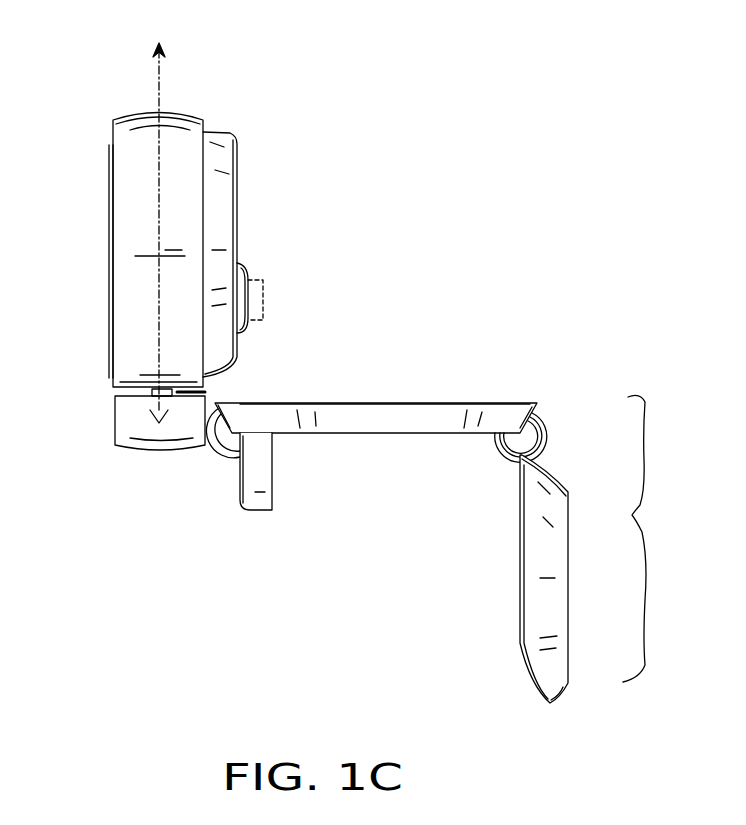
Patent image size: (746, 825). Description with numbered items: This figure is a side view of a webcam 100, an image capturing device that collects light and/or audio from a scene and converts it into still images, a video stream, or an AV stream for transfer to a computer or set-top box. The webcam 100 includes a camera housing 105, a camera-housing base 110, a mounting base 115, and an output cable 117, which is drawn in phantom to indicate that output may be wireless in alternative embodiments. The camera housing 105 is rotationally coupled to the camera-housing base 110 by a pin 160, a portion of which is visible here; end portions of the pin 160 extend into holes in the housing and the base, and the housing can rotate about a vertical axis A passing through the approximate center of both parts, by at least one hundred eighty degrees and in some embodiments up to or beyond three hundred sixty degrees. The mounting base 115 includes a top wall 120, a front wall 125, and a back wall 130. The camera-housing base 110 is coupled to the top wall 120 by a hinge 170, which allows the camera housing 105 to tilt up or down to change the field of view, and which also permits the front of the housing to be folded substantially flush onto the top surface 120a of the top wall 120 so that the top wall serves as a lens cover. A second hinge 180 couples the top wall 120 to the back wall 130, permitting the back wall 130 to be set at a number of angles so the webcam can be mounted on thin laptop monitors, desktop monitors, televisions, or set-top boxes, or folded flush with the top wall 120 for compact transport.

The webcam 100 is at (117, 600).
The camera housing 105 is at (122, 110).
The camera-housing base 110 is at (113, 423).
The mounting base 115 is at (672, 538).
The output cable 117 is at (268, 282).
The top wall 120 is at (507, 398).
The top surface of top wall 120a is at (372, 401).
The front wall 125 is at (245, 515).
The back wall 130 is at (570, 663).
The pin 160 is at (207, 392).
The hinge 170 is at (218, 456).
The hinge 180 is at (555, 433).
The axis A is at (159, 80).